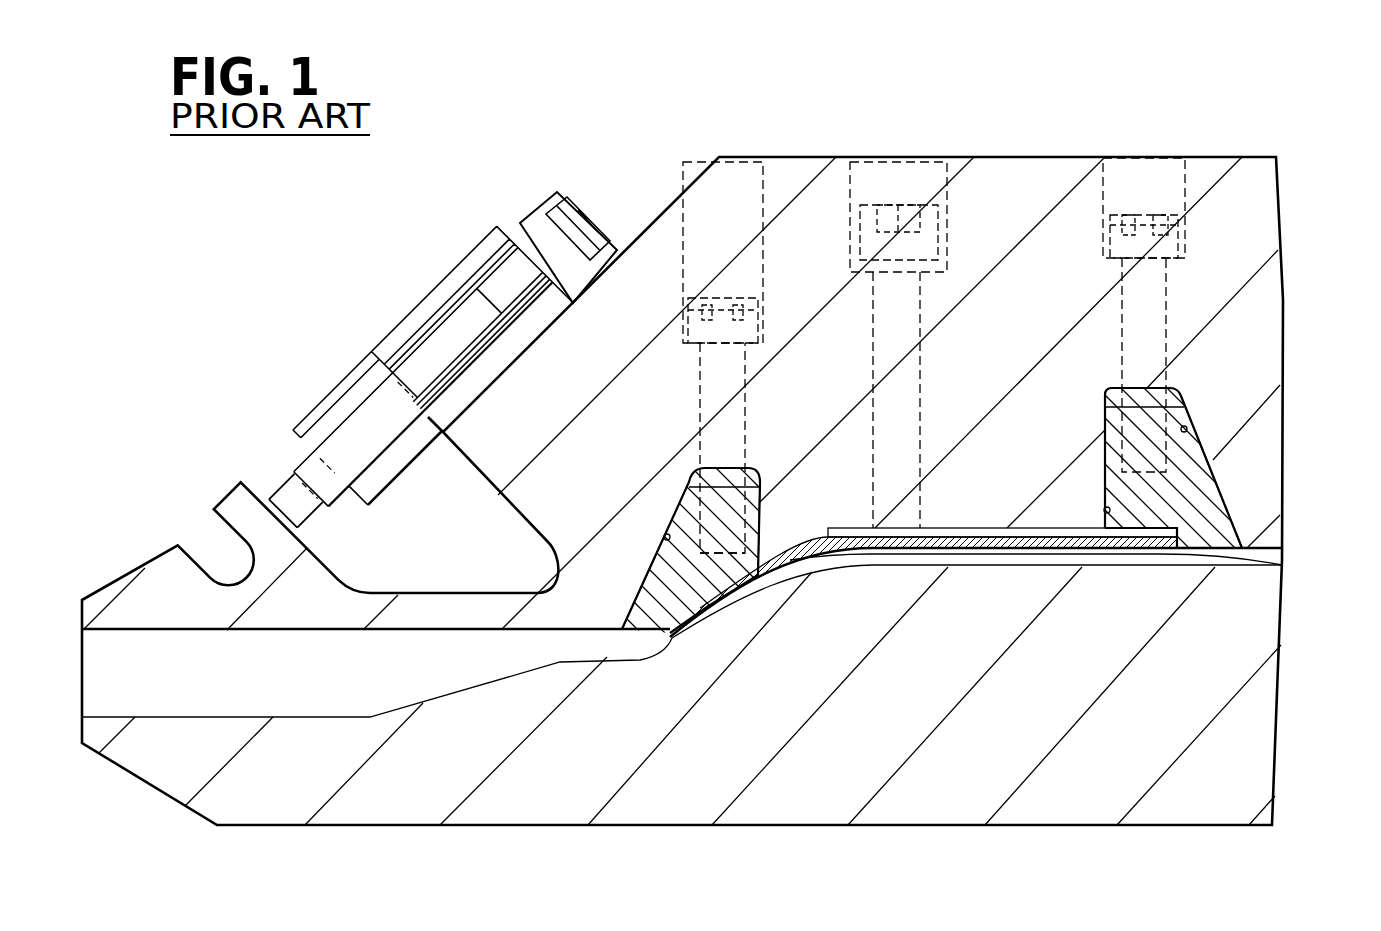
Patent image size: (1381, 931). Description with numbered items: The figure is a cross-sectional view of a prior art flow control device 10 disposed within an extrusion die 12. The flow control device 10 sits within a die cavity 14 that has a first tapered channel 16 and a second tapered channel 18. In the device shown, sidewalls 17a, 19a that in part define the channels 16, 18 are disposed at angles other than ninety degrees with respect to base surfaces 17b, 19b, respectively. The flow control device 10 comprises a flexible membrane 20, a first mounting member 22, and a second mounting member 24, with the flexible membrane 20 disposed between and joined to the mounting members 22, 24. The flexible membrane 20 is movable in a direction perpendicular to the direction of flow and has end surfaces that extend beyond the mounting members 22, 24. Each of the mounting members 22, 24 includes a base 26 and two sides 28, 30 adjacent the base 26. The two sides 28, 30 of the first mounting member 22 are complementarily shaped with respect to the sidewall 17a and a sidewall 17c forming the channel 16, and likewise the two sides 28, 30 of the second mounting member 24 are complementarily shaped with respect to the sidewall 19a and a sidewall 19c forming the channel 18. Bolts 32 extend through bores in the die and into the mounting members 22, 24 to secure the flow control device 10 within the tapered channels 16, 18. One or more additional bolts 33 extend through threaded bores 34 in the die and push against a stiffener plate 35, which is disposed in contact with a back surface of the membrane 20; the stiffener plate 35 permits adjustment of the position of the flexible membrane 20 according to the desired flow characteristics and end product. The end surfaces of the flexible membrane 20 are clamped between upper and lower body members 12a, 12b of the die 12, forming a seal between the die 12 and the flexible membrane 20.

The flow control device 10 is at (668, 638).
The extrusion die 12 is at (658, 191).
The upper body member 12a is at (1270, 218).
The lower body member 12b is at (915, 734).
The die cavity 14 is at (887, 556).
The first tapered channel 16 is at (717, 477).
The sidewall 17a is at (664, 536).
The base surface 17b is at (752, 467).
The sidewall 17c is at (760, 535).
The second tapered channel 18 is at (1157, 400).
The sidewall 19a is at (1188, 430).
The base surface 19b is at (1121, 390).
The sidewall 19c is at (1104, 510).
The flexible membrane 20 is at (1282, 563).
The first mounting member 22 is at (693, 520).
The second mounting member 24 is at (1210, 466).
The base 26 is at (703, 487).
The side 28 is at (637, 581).
The side 30 is at (757, 500).
The bolt 32 is at (735, 297).
The additional bolt 33 is at (890, 205).
The threaded bore 34 is at (910, 205).
The stiffener plate 35 is at (1003, 549).